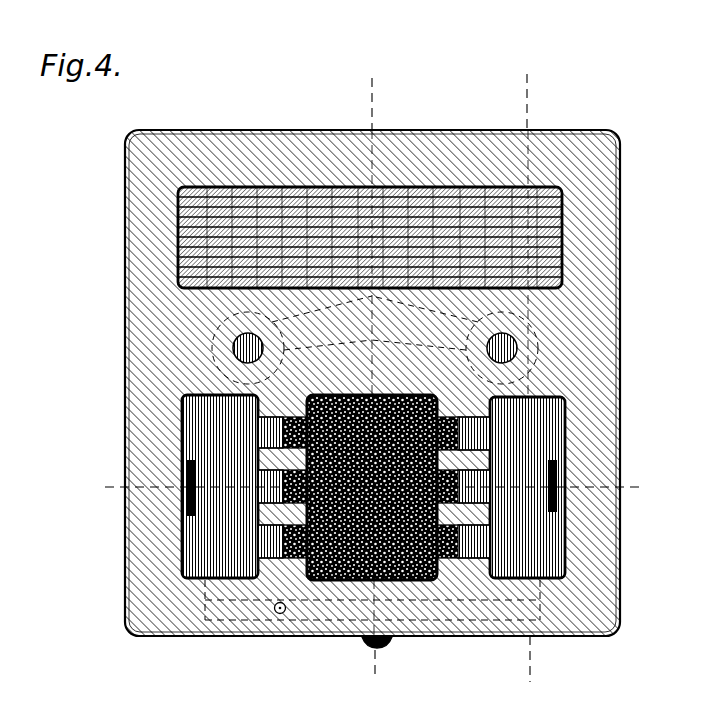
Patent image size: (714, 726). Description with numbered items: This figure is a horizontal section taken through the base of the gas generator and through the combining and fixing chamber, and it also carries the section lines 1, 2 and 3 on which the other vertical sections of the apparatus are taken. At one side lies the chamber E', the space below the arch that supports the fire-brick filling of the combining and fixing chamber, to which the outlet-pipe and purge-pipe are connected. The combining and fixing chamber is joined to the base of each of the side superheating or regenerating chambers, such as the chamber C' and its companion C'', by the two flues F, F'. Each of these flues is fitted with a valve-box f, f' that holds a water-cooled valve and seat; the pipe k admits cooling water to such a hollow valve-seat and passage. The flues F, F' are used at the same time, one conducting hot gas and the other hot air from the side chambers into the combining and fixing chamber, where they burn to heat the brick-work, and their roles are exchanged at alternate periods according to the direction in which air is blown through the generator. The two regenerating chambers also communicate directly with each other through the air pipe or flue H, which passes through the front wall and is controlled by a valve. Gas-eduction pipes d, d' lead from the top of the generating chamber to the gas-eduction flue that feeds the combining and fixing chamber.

The chamber below the arch E' is at (370, 222).
The flue F is at (244, 338).
The flue F' is at (493, 336).
The valve-box f is at (292, 340).
The valve-box f' is at (455, 340).
The regenerating-chamber C' is at (220, 486).
The carbon electrode block C'' is at (527, 487).
The gas-eduction pipe d is at (172, 485).
The contact strip d' is at (571, 481).
The pipe k is at (281, 616).
The air pipe or flue H is at (390, 652).
The section line 1 1 is at (373, 487).
The section line 2 2 is at (373, 379).
The section line 3 3 is at (527, 377).